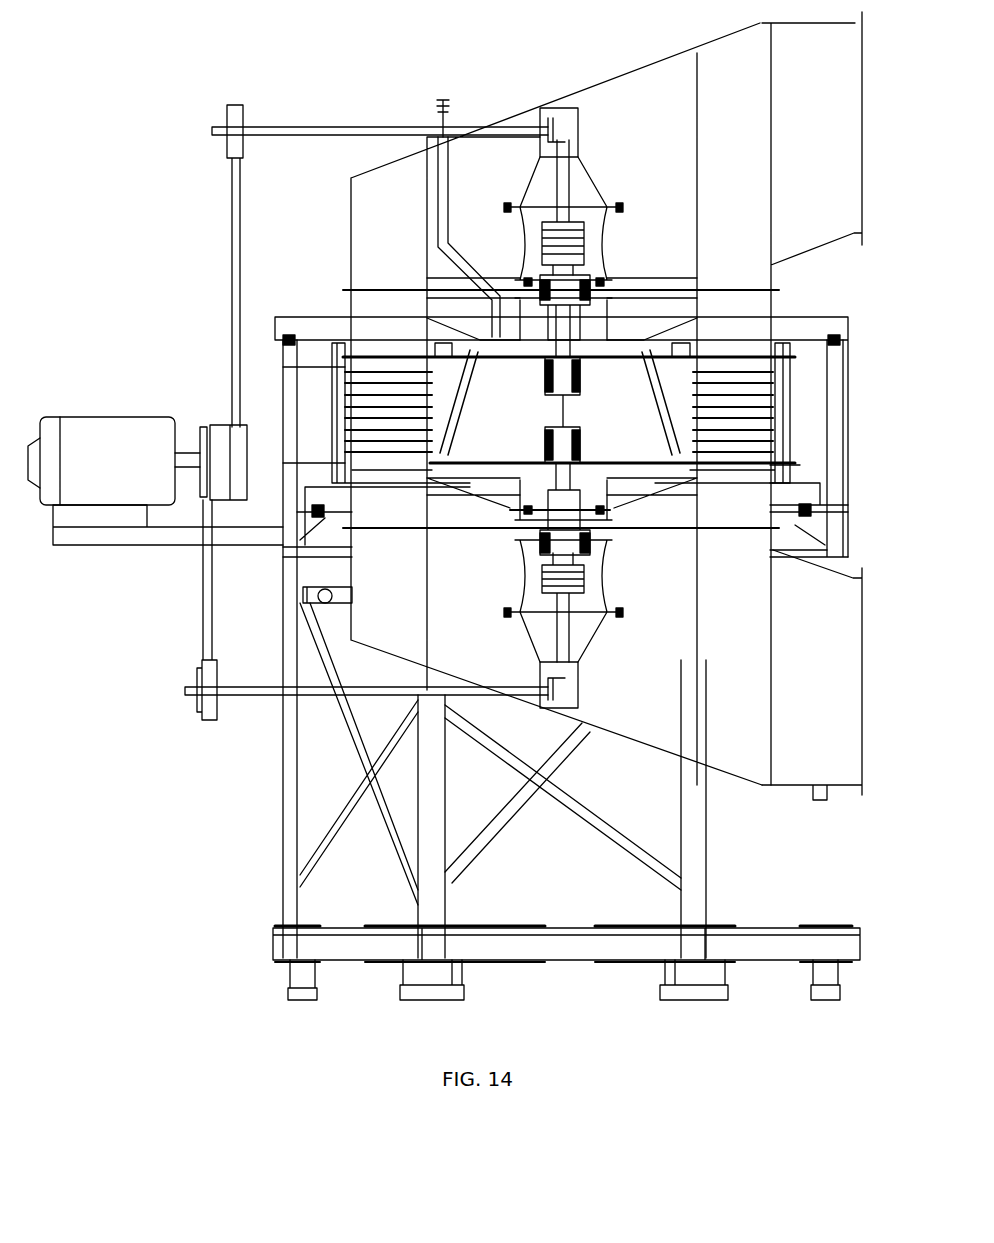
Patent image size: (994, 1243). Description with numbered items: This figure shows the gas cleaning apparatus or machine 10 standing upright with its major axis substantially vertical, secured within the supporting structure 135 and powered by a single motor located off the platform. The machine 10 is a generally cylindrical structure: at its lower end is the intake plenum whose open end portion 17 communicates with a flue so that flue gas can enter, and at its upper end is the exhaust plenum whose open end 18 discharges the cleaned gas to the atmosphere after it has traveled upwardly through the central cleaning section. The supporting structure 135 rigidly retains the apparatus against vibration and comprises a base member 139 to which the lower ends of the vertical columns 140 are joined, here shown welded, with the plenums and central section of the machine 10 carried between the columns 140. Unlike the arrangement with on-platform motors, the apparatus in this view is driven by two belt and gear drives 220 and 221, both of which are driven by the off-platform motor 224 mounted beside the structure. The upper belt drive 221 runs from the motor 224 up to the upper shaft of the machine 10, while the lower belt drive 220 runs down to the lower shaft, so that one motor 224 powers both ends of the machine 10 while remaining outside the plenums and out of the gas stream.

The apparatus or machine 10 is at (333, 208).
The open end portion 17 is at (866, 633).
The open end 18 is at (864, 77).
The supporting structure 135 is at (275, 850).
The base member 139 is at (275, 940).
The columns 140 is at (287, 758).
The belt and gear drive 220 is at (200, 628).
The belt and gear drive 221 is at (227, 254).
The off-platform motor 224 is at (133, 420).